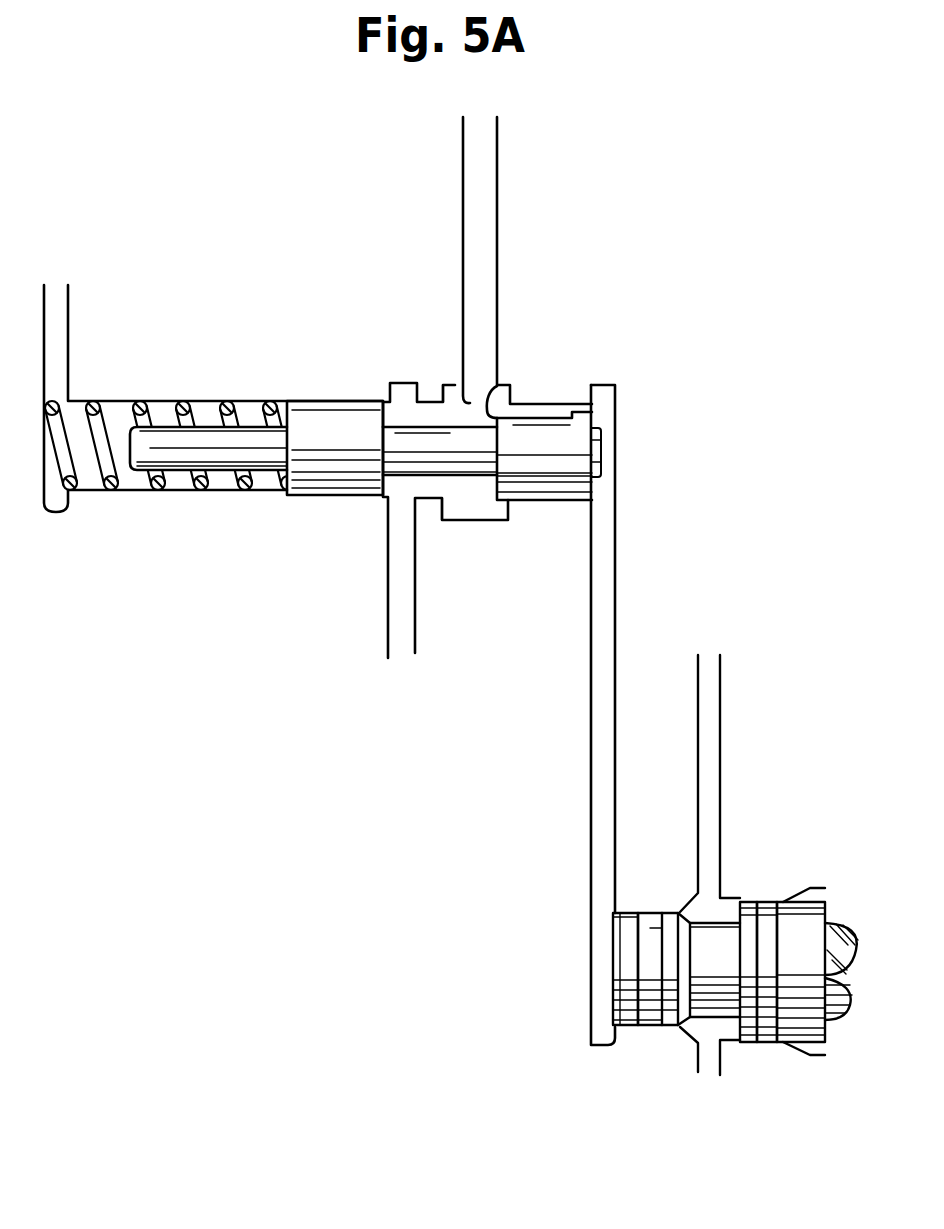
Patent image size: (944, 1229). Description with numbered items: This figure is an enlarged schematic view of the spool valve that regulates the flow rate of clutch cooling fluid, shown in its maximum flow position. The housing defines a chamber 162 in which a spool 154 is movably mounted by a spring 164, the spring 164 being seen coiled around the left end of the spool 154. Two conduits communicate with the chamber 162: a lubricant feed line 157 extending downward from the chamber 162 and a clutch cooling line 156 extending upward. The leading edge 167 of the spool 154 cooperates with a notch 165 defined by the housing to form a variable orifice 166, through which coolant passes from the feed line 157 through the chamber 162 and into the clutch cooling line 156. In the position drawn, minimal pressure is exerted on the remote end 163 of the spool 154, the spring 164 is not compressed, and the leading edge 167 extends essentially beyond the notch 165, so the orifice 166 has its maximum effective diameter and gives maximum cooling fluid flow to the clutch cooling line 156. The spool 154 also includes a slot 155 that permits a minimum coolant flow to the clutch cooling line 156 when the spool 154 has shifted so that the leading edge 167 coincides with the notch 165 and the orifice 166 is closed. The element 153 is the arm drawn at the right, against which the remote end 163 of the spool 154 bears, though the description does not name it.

The arm 153 is at (600, 592).
The spool 154 is at (415, 455).
The slot 155 is at (512, 398).
The clutch cooling line 156 is at (489, 275).
The lubricant feed line 157 is at (403, 618).
The chamber 162 is at (437, 484).
The remote end 163 is at (600, 417).
The spring 164 is at (153, 401).
The notch 165 is at (448, 388).
The variable orifice 166 is at (462, 394).
The leading edge 167 is at (543, 410).